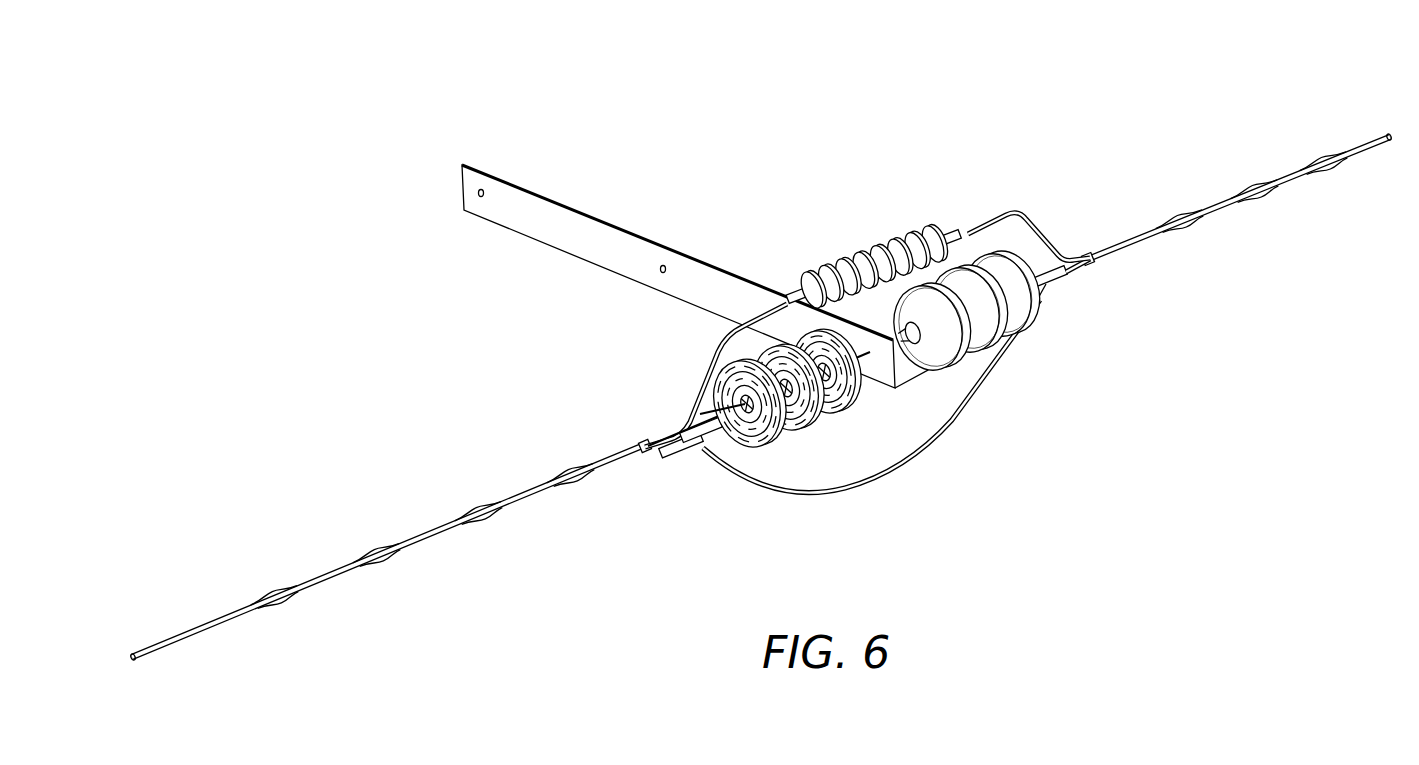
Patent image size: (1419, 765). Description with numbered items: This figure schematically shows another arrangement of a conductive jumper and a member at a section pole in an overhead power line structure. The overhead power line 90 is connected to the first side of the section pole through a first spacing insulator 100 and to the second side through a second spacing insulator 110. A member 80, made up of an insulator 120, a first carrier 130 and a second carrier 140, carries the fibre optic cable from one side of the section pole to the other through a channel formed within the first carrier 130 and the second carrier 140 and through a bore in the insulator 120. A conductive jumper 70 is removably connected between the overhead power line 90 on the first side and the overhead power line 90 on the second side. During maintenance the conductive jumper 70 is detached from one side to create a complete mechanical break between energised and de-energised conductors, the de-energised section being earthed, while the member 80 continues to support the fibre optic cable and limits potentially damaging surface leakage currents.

The conductive jumper 70 is at (740, 474).
The member 80 is at (1027, 175).
The overhead power line 90 is at (718, 410).
The first spacing insulator 100 is at (779, 444).
The second spacing insulator 110 is at (956, 366).
The insulator 120 is at (863, 250).
The first carrier 130 is at (680, 372).
The second carrier 140 is at (1045, 232).